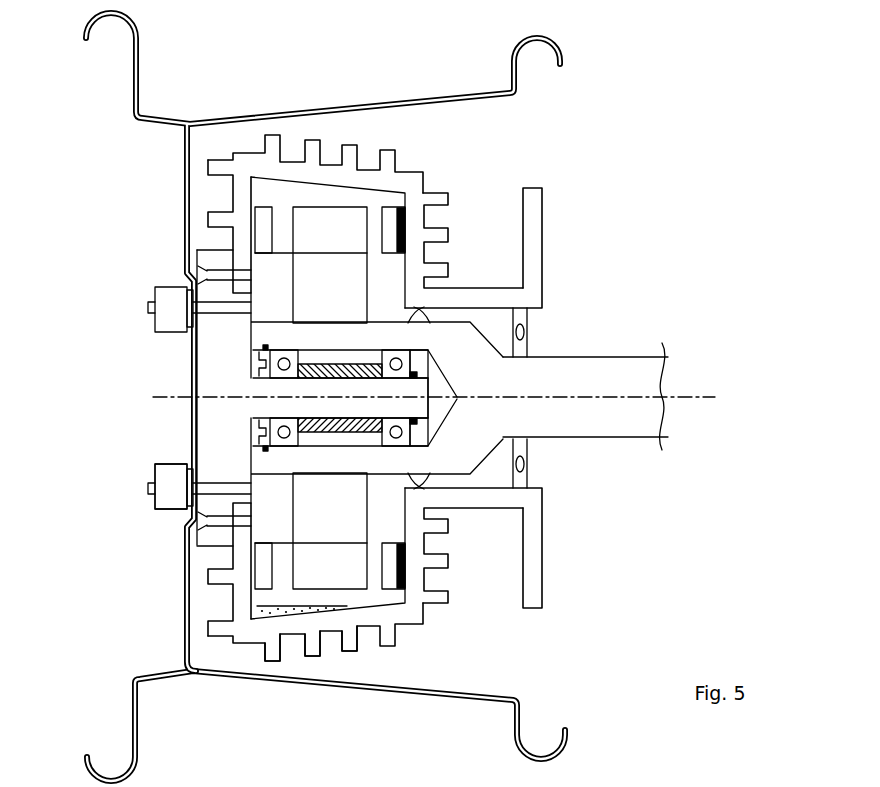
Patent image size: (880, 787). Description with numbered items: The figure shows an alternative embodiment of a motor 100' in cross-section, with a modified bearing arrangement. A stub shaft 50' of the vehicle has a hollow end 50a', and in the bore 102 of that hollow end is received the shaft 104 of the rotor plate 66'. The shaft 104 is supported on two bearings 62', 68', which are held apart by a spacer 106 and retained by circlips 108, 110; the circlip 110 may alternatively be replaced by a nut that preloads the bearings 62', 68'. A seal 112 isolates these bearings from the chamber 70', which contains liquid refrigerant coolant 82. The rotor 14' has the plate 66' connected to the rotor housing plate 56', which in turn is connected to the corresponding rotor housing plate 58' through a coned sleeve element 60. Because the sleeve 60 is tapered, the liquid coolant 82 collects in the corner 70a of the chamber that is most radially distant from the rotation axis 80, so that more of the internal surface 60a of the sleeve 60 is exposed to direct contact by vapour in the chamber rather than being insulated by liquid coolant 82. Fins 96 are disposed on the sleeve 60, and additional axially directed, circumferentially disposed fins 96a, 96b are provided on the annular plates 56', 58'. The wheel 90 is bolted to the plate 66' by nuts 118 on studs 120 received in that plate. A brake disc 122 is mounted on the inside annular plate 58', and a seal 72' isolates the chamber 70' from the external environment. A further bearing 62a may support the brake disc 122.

The rotor 14' is at (344, 397).
The stub shaft 50' is at (586, 420).
The hollow end 50a' is at (174, 267).
The rotor housing plate 56' is at (156, 226).
The rotor housing plate 58' is at (478, 216).
The coned sleeve element 60 is at (345, 192).
The internal surface of the sleeve 60a is at (362, 620).
The bearing 62' is at (559, 388).
The further bearing 62a is at (528, 473).
The rotor plate 66' is at (135, 397).
The bearing 68' is at (214, 513).
The chamber 70' is at (423, 250).
The corner of the chamber 70a is at (263, 618).
The seal 72' is at (517, 255).
The rotation axis 80 is at (700, 397).
The liquid refrigerant coolant 82 is at (282, 618).
The wheel 90 is at (523, 700).
The fins 96 is at (352, 643).
The fins 96a is at (237, 638).
The fins 96b is at (452, 593).
The motor 100' is at (389, 397).
The bore 102 is at (330, 350).
The shaft 104 is at (333, 383).
The spacer 106 is at (332, 433).
The circlip 108 is at (326, 493).
The circlip 110 is at (268, 347).
The seal 112 is at (265, 348).
The nuts 118 is at (153, 512).
The studs 120 is at (153, 483).
The brake disc 122 is at (542, 559).